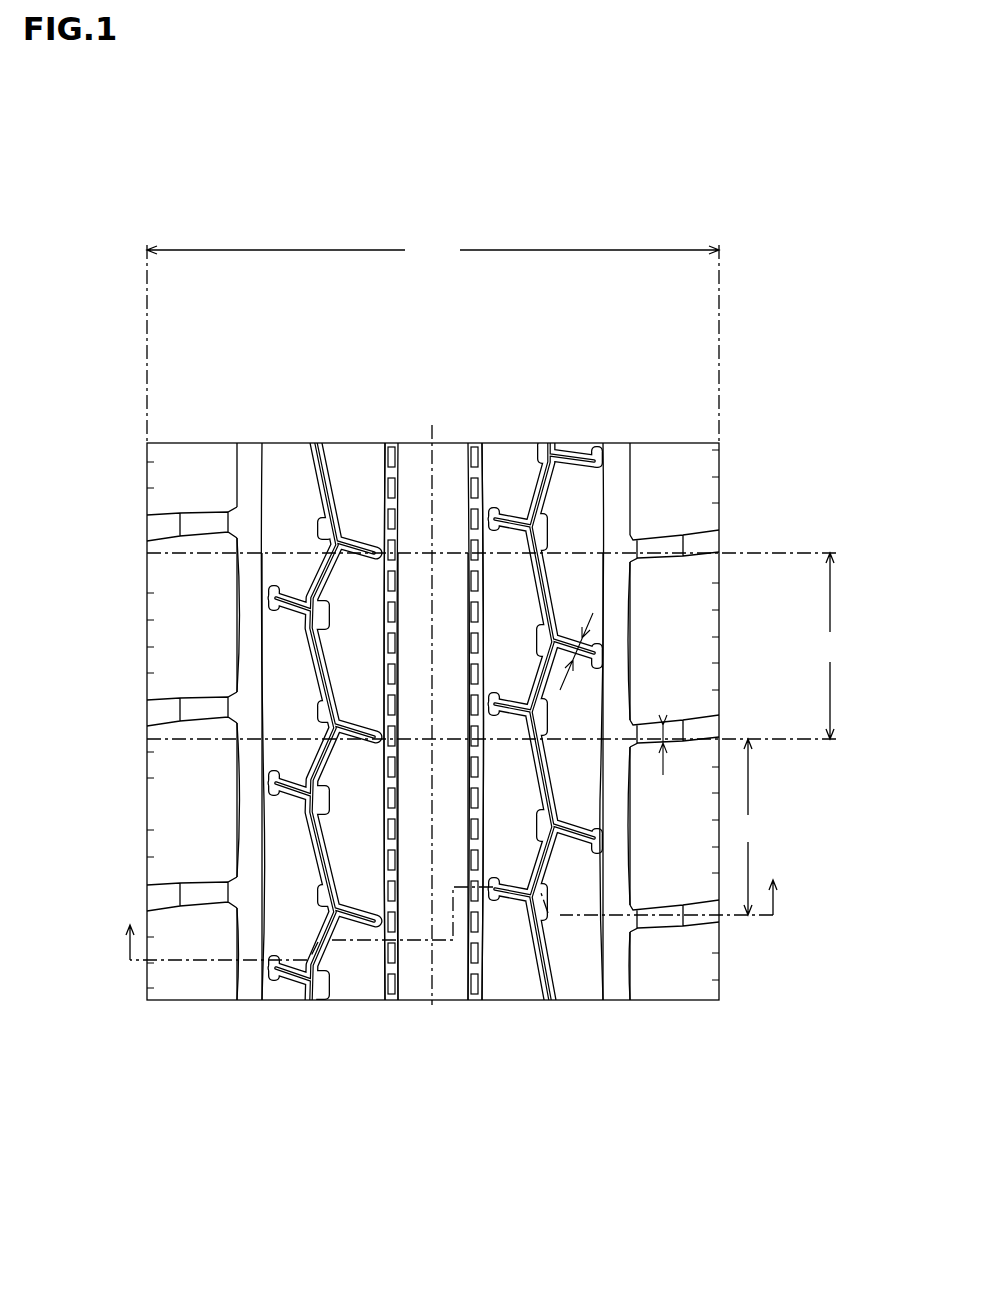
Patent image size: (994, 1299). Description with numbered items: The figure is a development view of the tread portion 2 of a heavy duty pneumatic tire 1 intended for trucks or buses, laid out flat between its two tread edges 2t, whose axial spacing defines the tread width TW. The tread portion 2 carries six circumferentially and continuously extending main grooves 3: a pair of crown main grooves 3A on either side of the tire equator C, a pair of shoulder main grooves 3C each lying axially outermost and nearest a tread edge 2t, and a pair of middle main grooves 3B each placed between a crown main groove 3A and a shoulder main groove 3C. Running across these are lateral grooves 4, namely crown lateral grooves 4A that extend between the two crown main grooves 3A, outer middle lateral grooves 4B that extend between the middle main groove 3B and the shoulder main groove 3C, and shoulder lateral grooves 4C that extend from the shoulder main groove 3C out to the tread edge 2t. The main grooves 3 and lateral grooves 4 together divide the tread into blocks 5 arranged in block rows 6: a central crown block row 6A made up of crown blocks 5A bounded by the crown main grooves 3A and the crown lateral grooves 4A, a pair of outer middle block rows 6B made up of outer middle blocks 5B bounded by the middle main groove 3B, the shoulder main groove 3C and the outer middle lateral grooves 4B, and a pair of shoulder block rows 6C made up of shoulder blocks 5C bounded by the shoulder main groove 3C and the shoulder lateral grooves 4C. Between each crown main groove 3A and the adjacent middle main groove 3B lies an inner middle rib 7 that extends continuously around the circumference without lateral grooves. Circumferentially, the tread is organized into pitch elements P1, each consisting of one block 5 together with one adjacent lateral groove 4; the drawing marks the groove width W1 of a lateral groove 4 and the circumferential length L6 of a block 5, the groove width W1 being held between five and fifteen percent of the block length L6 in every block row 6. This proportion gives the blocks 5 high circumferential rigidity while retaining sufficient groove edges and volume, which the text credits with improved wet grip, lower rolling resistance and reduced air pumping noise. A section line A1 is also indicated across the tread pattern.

The heavy duty pneumatic tire 1 is at (208, 440).
The tread portion 2 is at (668, 440).
The tread edge 2t is at (147, 477).
The main groove 3 is at (400, 345).
The crown main groove 3A is at (388, 440).
The middle main groove 3B is at (318, 440).
The shoulder main groove 3C is at (253, 440).
The lateral groove 4 is at (83, 722).
The crown lateral groove 4A is at (278, 779).
The outer middle lateral groove 4B is at (415, 808).
The shoulder lateral groove 4C is at (200, 886).
The block 5 is at (83, 530).
The crown block 5A is at (410, 567).
The outer middle block 5B is at (283, 657).
The shoulder block 5C is at (188, 674).
The block row 6 is at (438, 1103).
The crown block row 6A is at (447, 994).
The outer middle block row 6B is at (285, 994).
The shoulder block row 6C is at (203, 994).
The inner middle rib 7 is at (497, 446).
The tire equator C is at (436, 702).
The tread width TW is at (433, 254).
The pitch element P1 is at (496, 646).
The groove width W1 is at (590, 652).
The circumferential length of the block L6 is at (748, 827).
The section line A1 is at (451, 920).